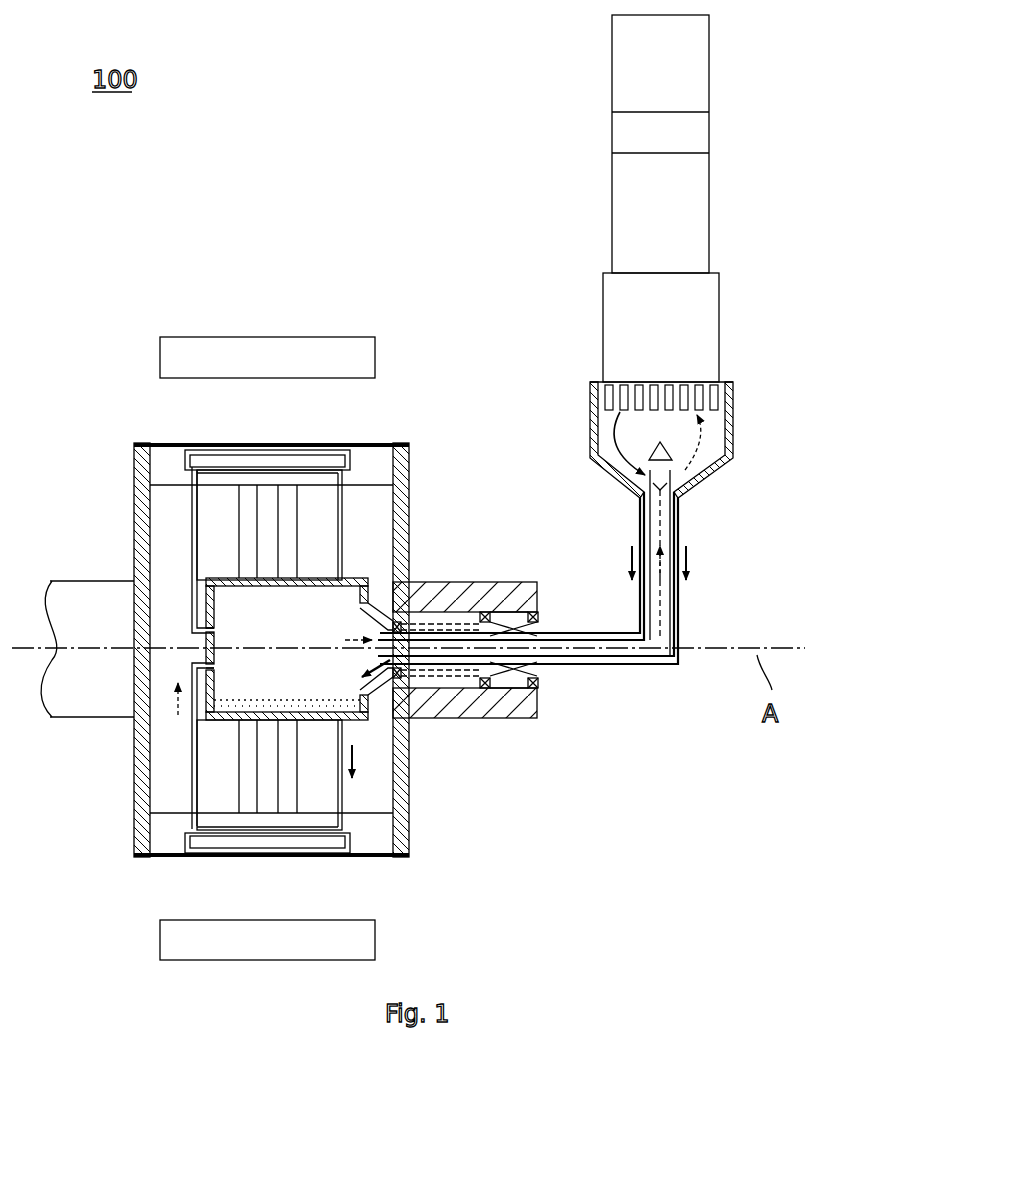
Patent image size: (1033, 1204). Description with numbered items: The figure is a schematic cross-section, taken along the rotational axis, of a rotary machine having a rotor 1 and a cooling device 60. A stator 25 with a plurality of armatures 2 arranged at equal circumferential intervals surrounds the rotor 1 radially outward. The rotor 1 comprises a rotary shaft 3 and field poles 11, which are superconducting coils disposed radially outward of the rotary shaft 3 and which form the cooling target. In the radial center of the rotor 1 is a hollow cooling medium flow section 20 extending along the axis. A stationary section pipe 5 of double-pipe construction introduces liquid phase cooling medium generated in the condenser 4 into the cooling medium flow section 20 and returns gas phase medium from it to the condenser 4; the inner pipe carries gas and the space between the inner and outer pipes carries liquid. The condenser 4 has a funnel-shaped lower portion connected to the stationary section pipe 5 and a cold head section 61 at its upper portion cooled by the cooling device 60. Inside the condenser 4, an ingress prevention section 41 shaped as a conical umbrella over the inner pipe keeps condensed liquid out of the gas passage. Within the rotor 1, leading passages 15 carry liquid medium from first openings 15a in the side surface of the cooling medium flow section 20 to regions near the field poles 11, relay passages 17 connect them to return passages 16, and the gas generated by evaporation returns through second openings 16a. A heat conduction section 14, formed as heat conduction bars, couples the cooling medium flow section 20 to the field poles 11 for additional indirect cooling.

The rotor 1 is at (80, 772).
The armatures 2 is at (375, 366).
The rotary shaft 3 is at (67, 581).
The condenser 4 is at (733, 432).
The stationary section pipe 5 is at (703, 530).
The field poles 11 is at (325, 452).
The heat conduction section 14 is at (238, 542).
The leading passages 15 is at (343, 502).
The first openings 15a is at (340, 590).
The return passages 16 is at (193, 552).
The second openings 16a is at (216, 630).
The relay passages 17 is at (205, 455).
The cooling medium flow section 20 is at (308, 646).
The stator 25 is at (372, 303).
The ingress prevention section 41 is at (680, 402).
The cooling device 60 is at (709, 70).
The cold head section 61 is at (720, 318).